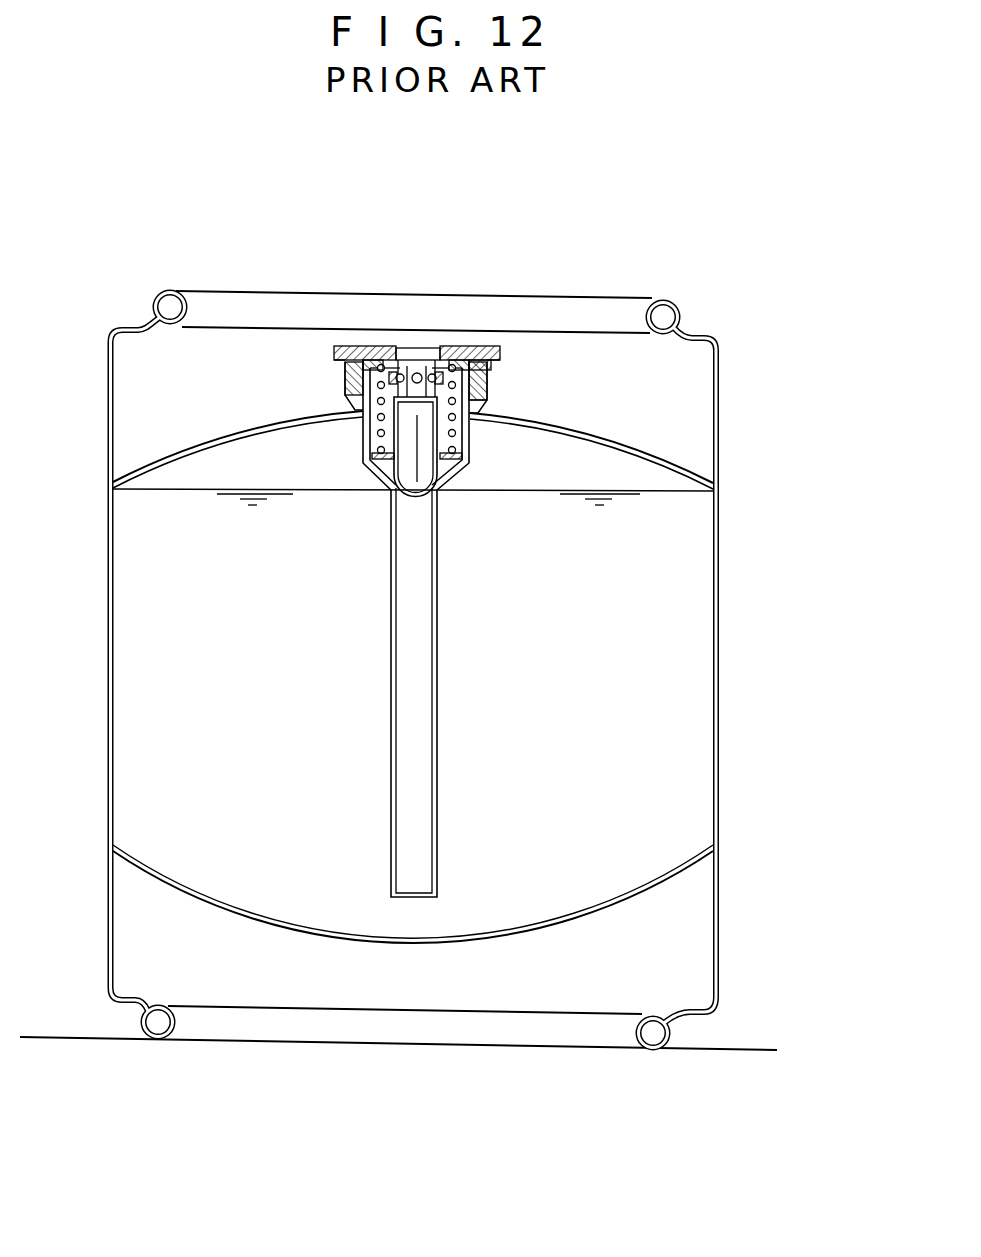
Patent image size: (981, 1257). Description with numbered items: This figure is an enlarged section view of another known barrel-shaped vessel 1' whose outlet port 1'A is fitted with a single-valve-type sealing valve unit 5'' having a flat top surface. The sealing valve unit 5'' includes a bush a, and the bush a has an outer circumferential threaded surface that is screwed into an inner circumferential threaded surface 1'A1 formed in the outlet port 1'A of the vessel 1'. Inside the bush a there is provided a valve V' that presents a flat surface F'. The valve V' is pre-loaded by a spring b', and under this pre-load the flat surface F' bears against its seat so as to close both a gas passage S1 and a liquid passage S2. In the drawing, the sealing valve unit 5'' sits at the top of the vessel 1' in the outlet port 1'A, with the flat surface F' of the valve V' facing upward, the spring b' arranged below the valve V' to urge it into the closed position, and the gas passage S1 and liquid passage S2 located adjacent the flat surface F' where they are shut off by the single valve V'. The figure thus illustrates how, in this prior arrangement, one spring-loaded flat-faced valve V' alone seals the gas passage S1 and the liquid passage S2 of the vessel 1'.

The vessel 1' is at (463, 669).
The outlet port 1'A is at (345, 329).
The inner circumferential threaded surface 1'A1 is at (382, 299).
The sealing valve unit 5'' is at (461, 555).
The gas passage S1 is at (377, 347).
The liquid passage S2 is at (400, 350).
The valve V' is at (414, 371).
The flat surface F' is at (460, 308).
The bush a is at (490, 383).
The spring b' is at (535, 416).